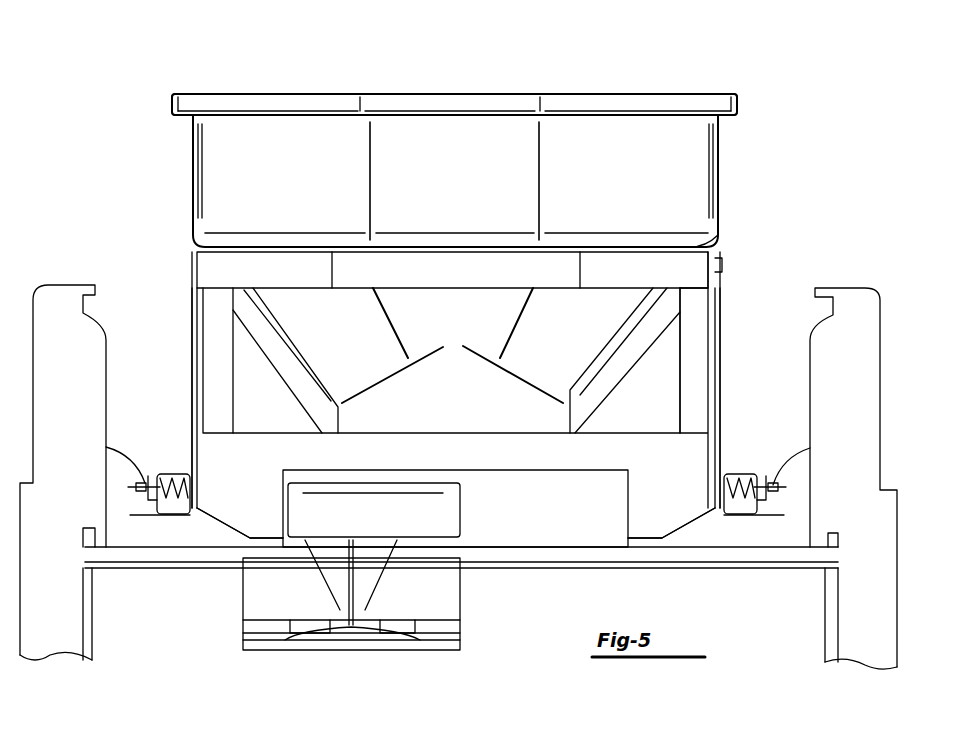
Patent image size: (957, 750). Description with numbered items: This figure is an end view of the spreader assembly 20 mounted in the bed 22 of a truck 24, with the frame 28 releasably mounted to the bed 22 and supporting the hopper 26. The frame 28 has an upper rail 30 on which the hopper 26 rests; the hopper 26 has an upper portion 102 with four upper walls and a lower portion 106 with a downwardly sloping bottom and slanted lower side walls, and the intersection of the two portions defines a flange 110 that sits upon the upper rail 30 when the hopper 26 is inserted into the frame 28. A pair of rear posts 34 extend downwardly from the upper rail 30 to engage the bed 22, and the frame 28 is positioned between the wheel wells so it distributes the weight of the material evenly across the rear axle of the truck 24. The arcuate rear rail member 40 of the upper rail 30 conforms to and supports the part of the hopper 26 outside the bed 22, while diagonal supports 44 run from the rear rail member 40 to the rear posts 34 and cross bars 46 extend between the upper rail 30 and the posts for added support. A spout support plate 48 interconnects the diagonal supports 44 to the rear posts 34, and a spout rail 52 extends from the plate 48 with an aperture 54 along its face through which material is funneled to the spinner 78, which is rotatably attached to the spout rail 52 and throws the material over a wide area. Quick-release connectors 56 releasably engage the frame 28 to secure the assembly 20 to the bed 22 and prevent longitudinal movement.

The spreader assembly 20 is at (158, 118).
The hopper 26 is at (736, 172).
The upper portion 102 is at (284, 146).
The flange 110 is at (732, 245).
The upper rail 30 is at (238, 264).
The rear rail member 40 is at (703, 289).
The frame 28 is at (180, 326).
The diagonal support 44 is at (213, 373).
The cross bars 46 is at (280, 374).
The lower portion 106 is at (542, 368).
The rear posts 34 is at (192, 410).
The bed 22 is at (120, 523).
The truck 24 is at (870, 304).
The quick-release connector 56 is at (163, 524).
The spout support plate 48 is at (660, 528).
The spout rail 52 is at (550, 546).
The aperture 54 is at (464, 510).
The spinner 78 is at (362, 666).